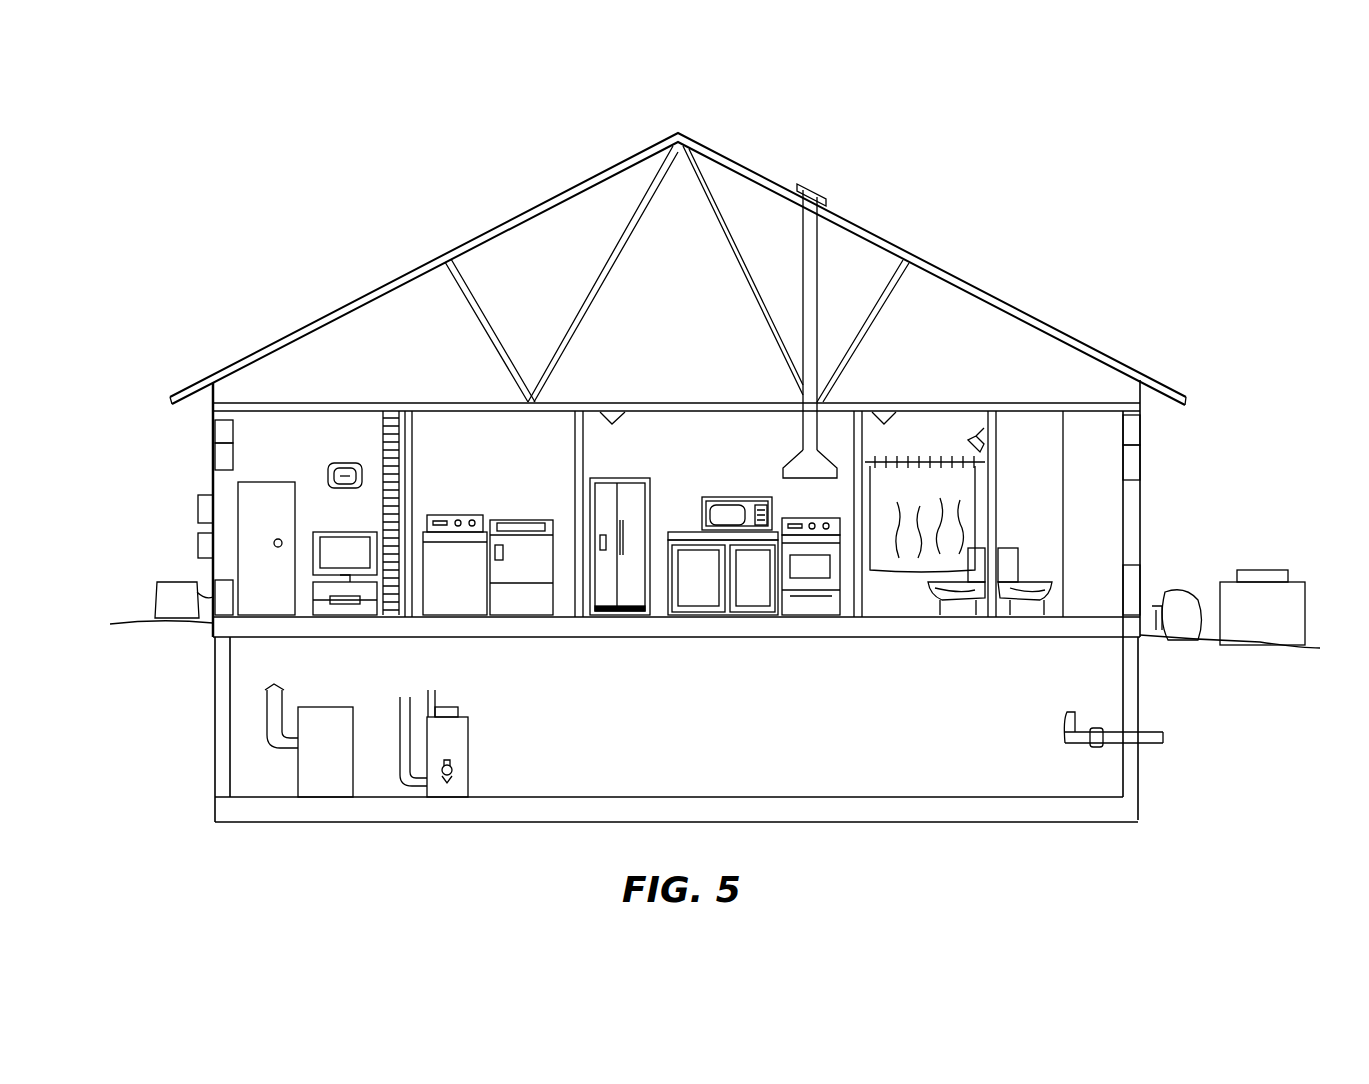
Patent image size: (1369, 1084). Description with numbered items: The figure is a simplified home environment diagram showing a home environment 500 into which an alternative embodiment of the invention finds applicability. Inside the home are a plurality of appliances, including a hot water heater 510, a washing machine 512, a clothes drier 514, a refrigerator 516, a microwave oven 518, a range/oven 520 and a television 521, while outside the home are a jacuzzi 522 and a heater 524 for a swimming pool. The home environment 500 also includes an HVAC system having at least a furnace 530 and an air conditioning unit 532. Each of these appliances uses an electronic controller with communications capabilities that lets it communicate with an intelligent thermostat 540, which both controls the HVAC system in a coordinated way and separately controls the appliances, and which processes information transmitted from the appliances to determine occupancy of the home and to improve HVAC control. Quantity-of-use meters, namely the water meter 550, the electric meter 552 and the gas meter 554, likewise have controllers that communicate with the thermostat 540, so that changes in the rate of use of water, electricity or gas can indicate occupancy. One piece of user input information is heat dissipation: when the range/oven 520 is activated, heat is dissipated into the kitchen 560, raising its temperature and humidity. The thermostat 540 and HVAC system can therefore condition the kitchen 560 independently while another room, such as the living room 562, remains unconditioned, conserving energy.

The home environment 500 is at (988, 212).
The hot water heater 510 is at (462, 740).
The washing machine 512 is at (418, 548).
The clothes drier 514 is at (550, 540).
The refrigerator 516 is at (652, 578).
The microwave oven 518 is at (710, 497).
The range/oven 520 is at (838, 578).
The television 521 is at (318, 532).
The jacuzzi 522 is at (1305, 590).
The heater for a swimming pool 524 is at (1170, 590).
The furnace 530 is at (335, 712).
The air conditioning unit 532 is at (170, 582).
The intelligent thermostat 540 is at (328, 472).
The water meter 550 is at (1098, 728).
The electric meter 552 is at (198, 500).
The gas meter 554 is at (198, 540).
The kitchen 560 is at (760, 450).
The living room 562 is at (345, 445).